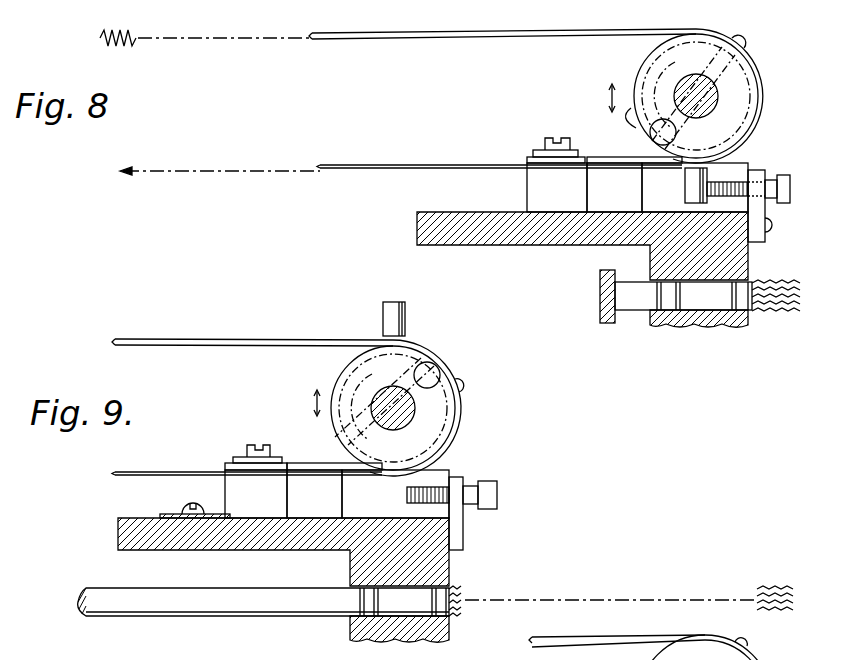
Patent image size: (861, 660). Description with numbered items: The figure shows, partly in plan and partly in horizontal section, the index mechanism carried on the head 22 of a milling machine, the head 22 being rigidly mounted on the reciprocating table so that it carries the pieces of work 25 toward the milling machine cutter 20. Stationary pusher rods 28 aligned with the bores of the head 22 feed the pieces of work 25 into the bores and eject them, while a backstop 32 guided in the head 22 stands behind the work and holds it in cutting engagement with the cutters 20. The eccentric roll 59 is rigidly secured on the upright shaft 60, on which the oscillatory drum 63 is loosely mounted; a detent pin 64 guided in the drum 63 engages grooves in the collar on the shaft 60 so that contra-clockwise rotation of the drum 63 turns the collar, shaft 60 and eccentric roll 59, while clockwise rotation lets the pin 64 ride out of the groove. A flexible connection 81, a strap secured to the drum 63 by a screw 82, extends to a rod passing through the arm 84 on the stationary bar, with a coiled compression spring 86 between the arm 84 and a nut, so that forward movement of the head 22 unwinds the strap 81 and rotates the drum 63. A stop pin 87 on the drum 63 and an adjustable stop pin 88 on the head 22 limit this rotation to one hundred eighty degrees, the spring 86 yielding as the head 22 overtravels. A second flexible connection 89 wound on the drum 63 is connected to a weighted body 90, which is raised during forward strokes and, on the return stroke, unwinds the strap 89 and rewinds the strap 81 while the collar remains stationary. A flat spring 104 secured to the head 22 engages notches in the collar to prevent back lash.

In FIG. 8, the milling machine cutter 20 is at (771, 313).
In FIG. 9, the milling machine cutter 20 is at (778, 589).
In FIG. 8, the head 22 is at (672, 323).
In FIG. 9, the head 22 is at (449, 565).
In FIG. 8, the piece of work 25 is at (633, 312).
In FIG. 9, the piece of work 25 is at (335, 617).
In FIG. 9, the pusher rod 28 is at (219, 618).
In FIG. 8, the backstop 32 is at (600, 296).
In FIG. 8, the eccentric roll 59 is at (650, 80).
In FIG. 9, the eccentric roll 59 is at (352, 380).
In FIG. 8, the upright shaft 60 is at (716, 100).
In FIG. 9, the upright shaft 60 is at (416, 410).
In FIG. 8, the oscillatory drum 63 is at (735, 80).
In FIG. 9, the oscillatory drum 63 is at (440, 437).
In FIG. 8, the detent pin 64 is at (650, 132).
In FIG. 9, the detent pin 64 is at (432, 364).
In FIG. 8, the flexible connection 81 is at (425, 36).
In FIG. 9, the flexible connection 81 is at (212, 341).
In FIG. 8, the screw 82 is at (737, 37).
In FIG. 9, the arm 84 is at (568, 648).
In FIG. 8, the coiled compression spring 86 is at (140, 37).
In FIG. 8, the stop pin 87 is at (693, 180).
In FIG. 9, the stop pin 87 is at (405, 306).
In FIG. 8, the adjustable stop pin 88 is at (796, 163).
In FIG. 9, the adjustable stop pin 88 is at (497, 493).
In FIG. 8, the second flexible connection 89 is at (418, 160).
In FIG. 9, the second flexible connection 89 is at (128, 478).
In FIG. 8, the weighted body 90 is at (202, 180).
In FIG. 8, the flat spring 104 is at (592, 157).
In FIG. 9, the flat spring 104 is at (308, 463).